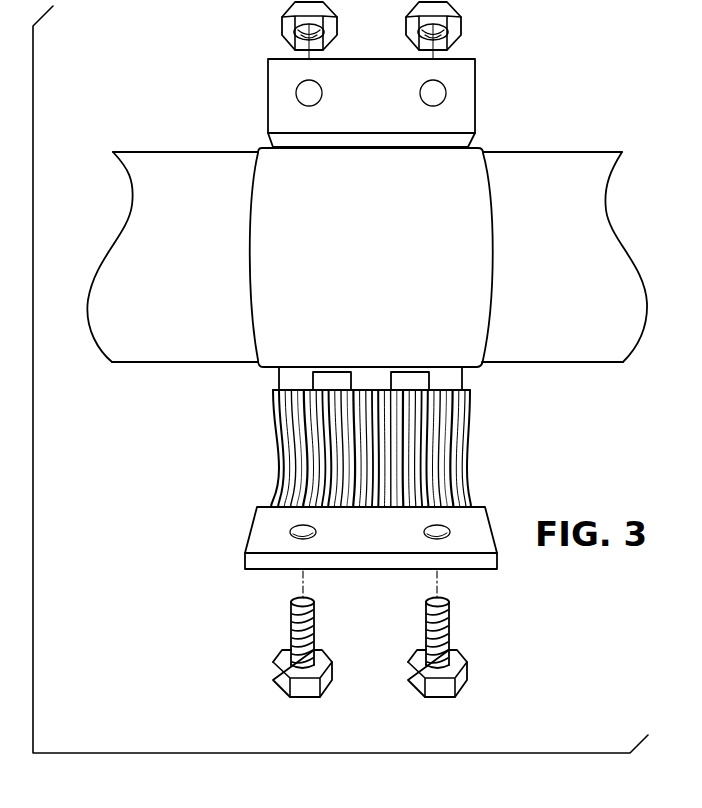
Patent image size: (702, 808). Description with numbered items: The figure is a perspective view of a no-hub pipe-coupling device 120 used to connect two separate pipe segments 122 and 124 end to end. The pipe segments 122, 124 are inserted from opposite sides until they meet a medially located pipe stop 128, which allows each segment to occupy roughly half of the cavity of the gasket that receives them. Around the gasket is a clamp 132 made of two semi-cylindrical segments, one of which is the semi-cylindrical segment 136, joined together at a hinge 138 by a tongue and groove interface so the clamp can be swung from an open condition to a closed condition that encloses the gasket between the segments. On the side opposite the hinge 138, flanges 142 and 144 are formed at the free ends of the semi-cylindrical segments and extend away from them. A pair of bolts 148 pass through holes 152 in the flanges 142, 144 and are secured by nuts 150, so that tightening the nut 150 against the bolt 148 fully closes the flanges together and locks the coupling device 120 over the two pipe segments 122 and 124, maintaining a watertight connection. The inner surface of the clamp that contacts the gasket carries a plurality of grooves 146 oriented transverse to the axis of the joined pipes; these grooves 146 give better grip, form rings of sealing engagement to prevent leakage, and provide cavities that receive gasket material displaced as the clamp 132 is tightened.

The pipe-coupling device 120 is at (170, 498).
The pipe segment 122 is at (153, 178).
The pipe segment 124 is at (583, 172).
The pipe stop 128 is at (480, 154).
The clamp 132 is at (238, 611).
The semi-cylindrical segment 136 is at (470, 419).
The hinge 138 is at (238, 399).
The flange 142 is at (476, 76).
The flange 144 is at (478, 565).
The grooves 146 is at (410, 465).
The bolts 148 is at (328, 695).
The nuts 150 is at (283, 21).
The holes 152 is at (423, 92).